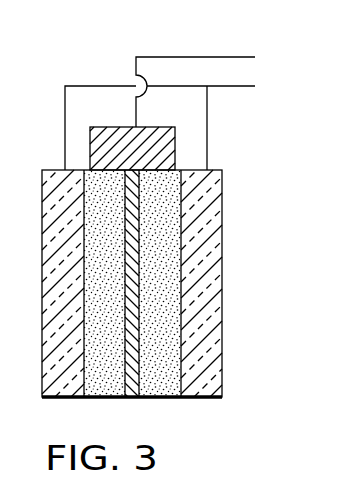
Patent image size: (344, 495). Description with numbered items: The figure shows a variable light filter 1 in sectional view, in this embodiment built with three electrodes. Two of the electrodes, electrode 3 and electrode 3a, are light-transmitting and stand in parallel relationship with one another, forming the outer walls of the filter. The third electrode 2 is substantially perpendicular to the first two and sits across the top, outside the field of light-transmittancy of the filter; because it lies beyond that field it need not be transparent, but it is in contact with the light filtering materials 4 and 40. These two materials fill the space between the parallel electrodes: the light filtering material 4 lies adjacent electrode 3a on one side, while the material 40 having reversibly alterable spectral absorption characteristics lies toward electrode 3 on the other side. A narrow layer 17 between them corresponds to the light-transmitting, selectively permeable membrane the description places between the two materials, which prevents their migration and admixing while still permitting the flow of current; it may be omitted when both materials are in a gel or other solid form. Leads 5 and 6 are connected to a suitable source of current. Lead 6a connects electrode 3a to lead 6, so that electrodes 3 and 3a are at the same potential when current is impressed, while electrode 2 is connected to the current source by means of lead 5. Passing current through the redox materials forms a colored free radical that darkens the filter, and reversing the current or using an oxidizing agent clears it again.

The light filter 1 is at (38, 284).
The electrode 2 is at (90, 141).
The electrode 3 is at (47, 173).
The electrode 3a is at (215, 190).
The redox compound 4 is at (161, 392).
The lead 5 is at (136, 109).
The lead 6 is at (65, 105).
The lead 6a is at (207, 121).
The separator membrane 17 is at (132, 394).
The material having reversibly alterable spectral absorption characteristics 40 is at (104, 393).